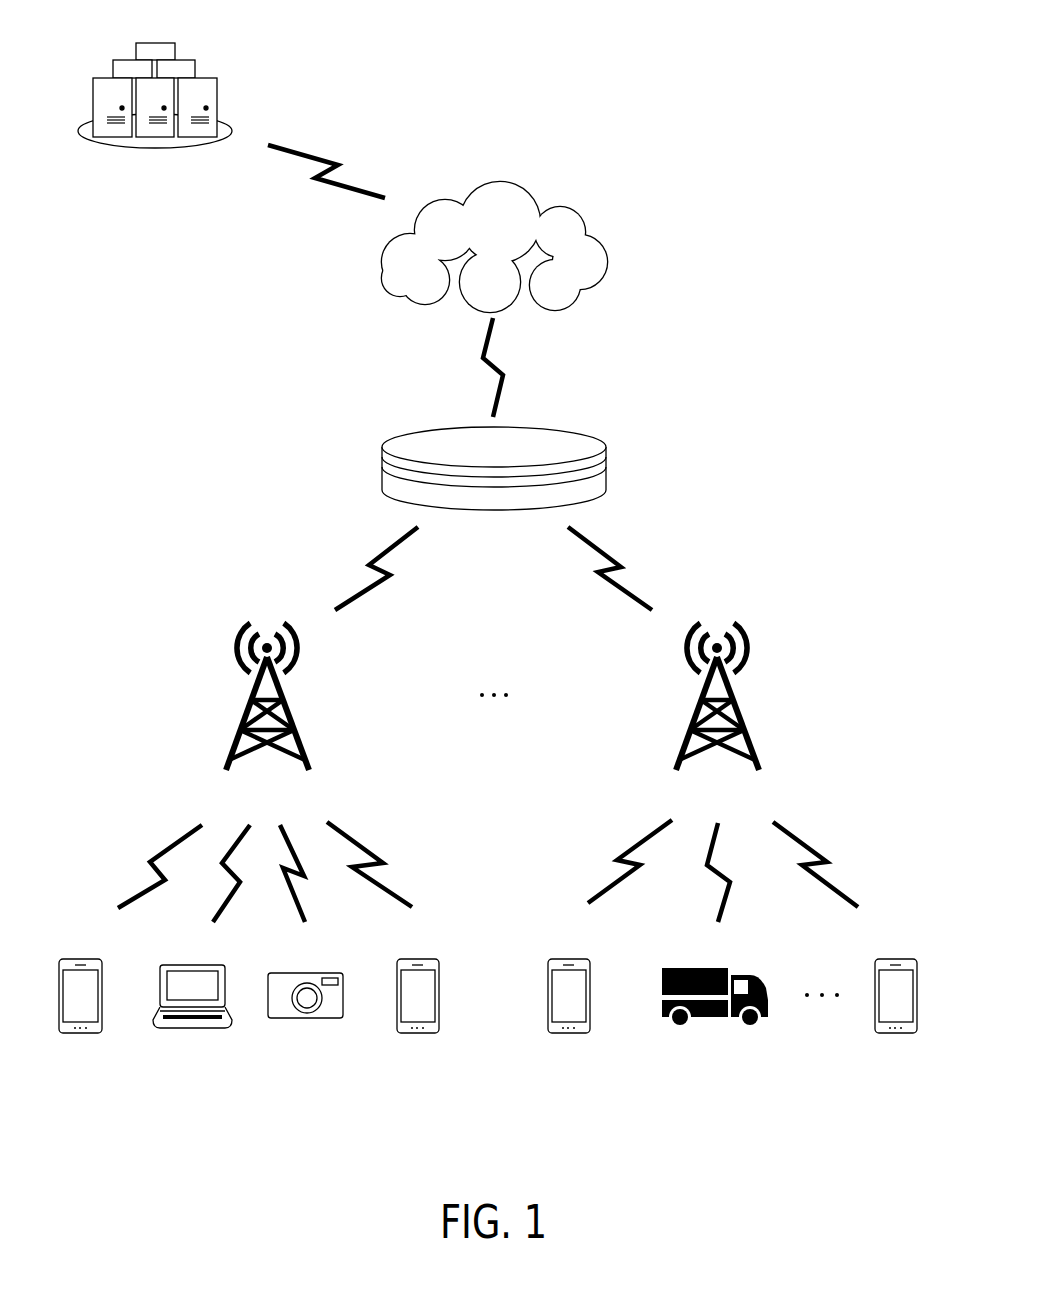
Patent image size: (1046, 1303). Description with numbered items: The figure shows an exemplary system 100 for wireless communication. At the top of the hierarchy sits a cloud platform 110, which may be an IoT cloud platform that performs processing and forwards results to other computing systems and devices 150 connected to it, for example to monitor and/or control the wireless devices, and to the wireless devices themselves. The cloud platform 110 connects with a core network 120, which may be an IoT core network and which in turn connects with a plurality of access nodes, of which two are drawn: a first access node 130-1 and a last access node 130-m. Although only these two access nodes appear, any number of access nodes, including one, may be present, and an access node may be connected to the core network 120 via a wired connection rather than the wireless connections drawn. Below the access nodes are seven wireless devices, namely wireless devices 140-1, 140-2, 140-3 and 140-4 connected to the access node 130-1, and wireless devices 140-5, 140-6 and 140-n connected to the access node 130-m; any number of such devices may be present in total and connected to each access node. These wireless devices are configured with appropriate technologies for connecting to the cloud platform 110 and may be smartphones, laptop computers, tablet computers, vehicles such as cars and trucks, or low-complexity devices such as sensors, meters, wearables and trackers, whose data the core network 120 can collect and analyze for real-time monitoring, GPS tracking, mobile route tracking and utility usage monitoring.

The system 100 is at (752, 101).
The cloud platform 110 is at (607, 240).
The core network 120 is at (607, 455).
The access node 130-1 is at (295, 720).
The access node 130-m is at (745, 720).
The wireless device 140-1 is at (78, 1034).
The wireless device 140-2 is at (205, 1029).
The wireless device 140-3 is at (307, 1019).
The wireless device 140-4 is at (423, 1034).
The wireless device 140-5 is at (572, 1034).
The wireless device 140-6 is at (690, 1020).
The wireless device 140-n is at (900, 1034).
The computing systems and devices 150 is at (197, 73).